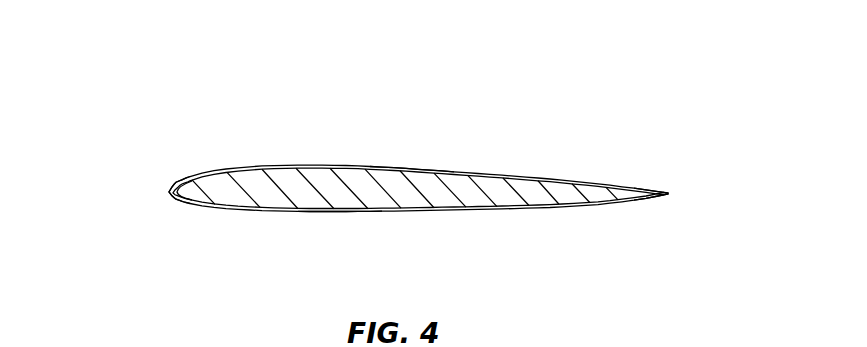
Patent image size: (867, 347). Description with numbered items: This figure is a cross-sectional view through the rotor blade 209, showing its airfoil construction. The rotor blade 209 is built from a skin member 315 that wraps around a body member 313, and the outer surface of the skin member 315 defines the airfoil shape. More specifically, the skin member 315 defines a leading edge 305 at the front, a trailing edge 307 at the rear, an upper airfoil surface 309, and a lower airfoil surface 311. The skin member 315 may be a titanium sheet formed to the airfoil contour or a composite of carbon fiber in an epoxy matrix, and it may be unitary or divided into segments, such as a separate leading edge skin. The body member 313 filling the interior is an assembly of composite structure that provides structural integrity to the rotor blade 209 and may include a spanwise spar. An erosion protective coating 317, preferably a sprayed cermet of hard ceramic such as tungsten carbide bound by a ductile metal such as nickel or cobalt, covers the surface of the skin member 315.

The rotor blade 209 is at (216, 114).
The leading edge 305 is at (172, 194).
The trailing edge 307 is at (668, 194).
The upper airfoil surface 309 is at (410, 168).
The lower airfoil surface 311 is at (341, 210).
The body member 313 is at (433, 193).
The skin member 315 is at (283, 168).
The erosion protective coating 317 is at (171, 189).